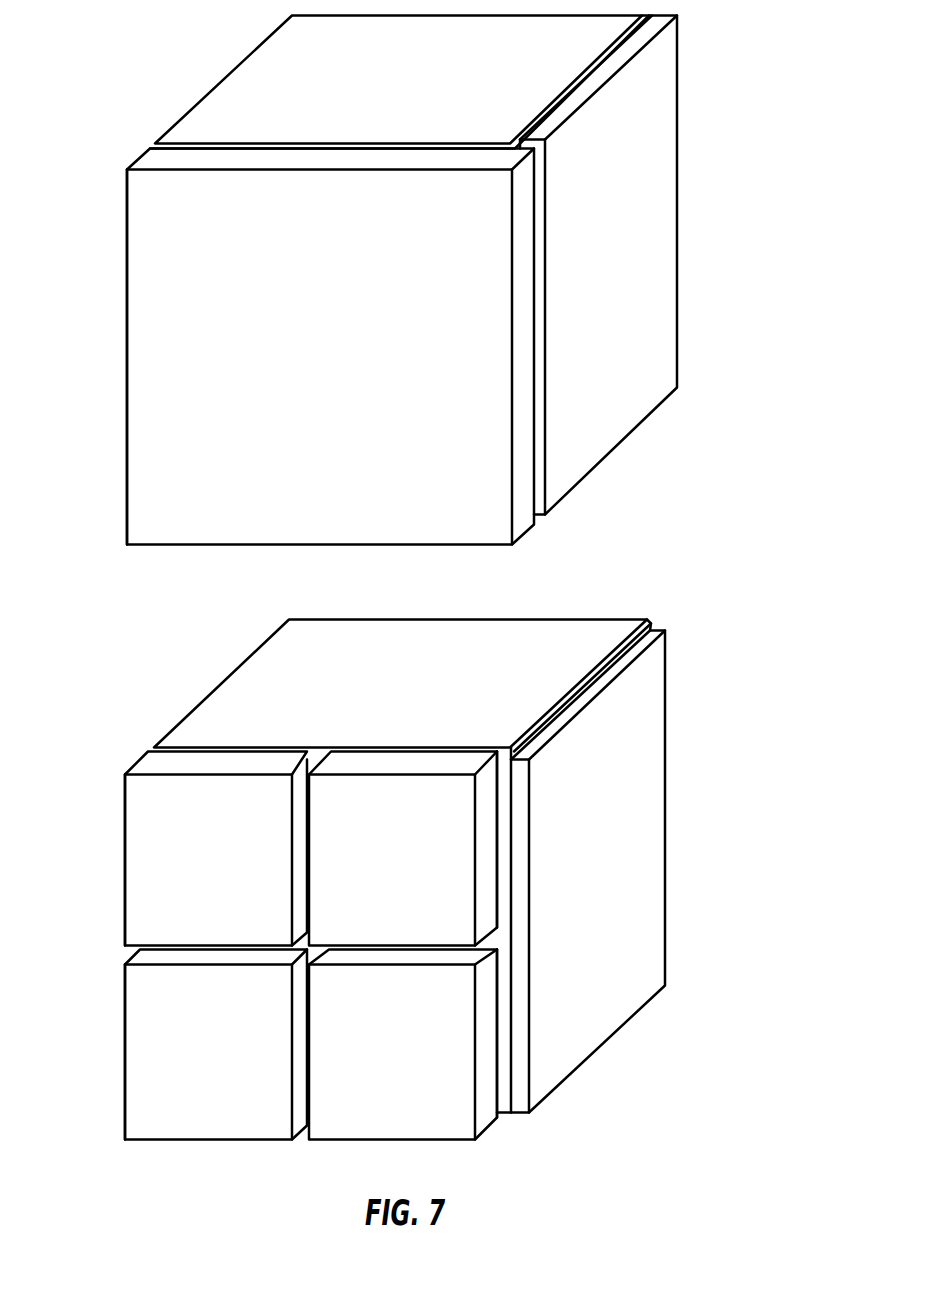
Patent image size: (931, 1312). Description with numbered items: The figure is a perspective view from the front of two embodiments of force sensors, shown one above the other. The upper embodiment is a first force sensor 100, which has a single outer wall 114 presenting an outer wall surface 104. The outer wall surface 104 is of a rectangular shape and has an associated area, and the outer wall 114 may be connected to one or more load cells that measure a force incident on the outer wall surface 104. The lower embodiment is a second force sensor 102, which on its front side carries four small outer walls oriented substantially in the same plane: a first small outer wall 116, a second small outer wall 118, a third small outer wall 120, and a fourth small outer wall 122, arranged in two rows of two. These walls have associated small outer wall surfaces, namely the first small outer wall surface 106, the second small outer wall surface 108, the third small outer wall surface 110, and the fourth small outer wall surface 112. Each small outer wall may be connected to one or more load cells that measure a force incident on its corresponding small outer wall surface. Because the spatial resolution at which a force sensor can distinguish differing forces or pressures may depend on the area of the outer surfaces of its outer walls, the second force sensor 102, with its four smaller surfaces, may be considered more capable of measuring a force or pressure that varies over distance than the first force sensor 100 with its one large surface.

The first force sensor 100 is at (715, 78).
The second force sensor 102 is at (714, 714).
The outer wall surface 104 is at (331, 346).
The first small outer wall surface 106 is at (233, 872).
The second small outer wall surface 108 is at (415, 872).
The third small outer wall surface 110 is at (233, 1061).
The fourth small outer wall surface 112 is at (415, 1061).
The outer wall 114 is at (123, 272).
The first small outer wall 116 is at (123, 858).
The second small outer wall 118 is at (483, 832).
The third small outer wall 120 is at (123, 1050).
The fourth small outer wall 122 is at (483, 1044).